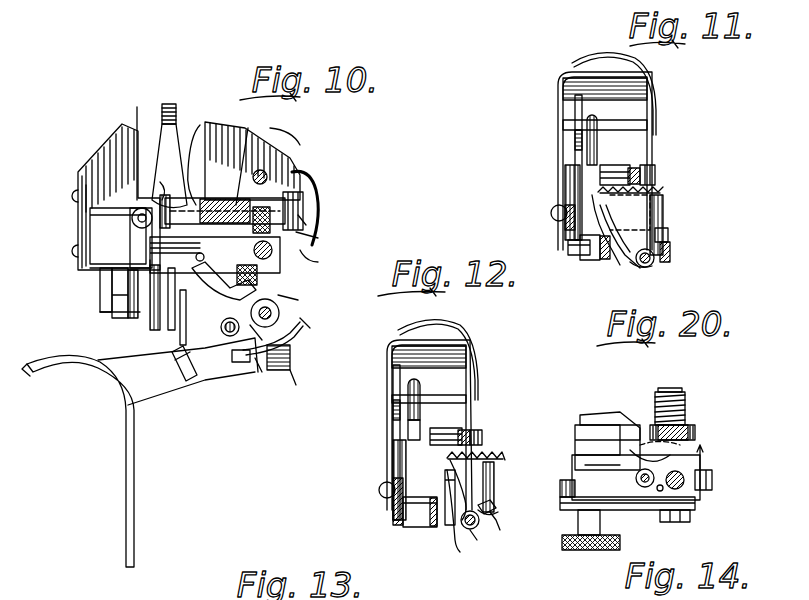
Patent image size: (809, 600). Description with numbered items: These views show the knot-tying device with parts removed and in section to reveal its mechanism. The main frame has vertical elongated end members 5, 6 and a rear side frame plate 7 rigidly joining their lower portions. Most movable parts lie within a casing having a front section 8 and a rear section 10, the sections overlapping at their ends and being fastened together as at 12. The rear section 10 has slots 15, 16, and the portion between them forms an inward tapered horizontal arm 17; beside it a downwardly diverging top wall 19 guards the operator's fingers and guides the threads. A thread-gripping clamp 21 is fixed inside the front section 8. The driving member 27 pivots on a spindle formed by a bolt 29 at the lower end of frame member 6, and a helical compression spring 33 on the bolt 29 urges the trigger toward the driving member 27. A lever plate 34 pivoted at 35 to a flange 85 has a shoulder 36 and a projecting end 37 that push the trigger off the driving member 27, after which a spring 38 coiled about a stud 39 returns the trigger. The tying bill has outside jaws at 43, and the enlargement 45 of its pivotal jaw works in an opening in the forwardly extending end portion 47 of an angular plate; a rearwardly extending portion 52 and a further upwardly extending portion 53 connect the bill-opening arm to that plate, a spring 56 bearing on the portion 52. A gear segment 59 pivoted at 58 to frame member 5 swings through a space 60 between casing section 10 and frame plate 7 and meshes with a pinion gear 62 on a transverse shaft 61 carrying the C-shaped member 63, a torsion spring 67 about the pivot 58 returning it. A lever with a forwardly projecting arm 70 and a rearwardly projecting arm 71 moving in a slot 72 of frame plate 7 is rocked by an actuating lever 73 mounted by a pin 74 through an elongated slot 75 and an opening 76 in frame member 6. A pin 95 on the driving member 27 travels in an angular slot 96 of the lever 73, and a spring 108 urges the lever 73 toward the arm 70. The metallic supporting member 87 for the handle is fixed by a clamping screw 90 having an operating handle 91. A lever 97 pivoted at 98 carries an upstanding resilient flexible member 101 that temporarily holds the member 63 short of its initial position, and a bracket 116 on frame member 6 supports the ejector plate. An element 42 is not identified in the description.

In FIG. 10, the end member 5 is at (118, 304).
In FIG. 11, the end member 5 is at (665, 212).
In FIG. 12, the end member 5 is at (488, 487).
In FIG. 10, the end member 6 is at (274, 140).
In FIG. 11, the rear side frame plate 7 is at (672, 254).
In FIG. 12, the rear side frame plate 7 is at (500, 528).
In FIG. 11, the front casing section 8 is at (560, 162).
In FIG. 12, the front casing section 8 is at (395, 436).
In FIG. 10, the rear casing section 10 is at (137, 132).
In FIG. 11, the rear casing section 10 is at (656, 90).
In FIG. 12, the rear casing section 10 is at (476, 402).
In FIG. 10, the casing fastening 12 is at (296, 140).
In FIG. 10, the slot 15 is at (136, 166).
In FIG. 10, the slot 16 is at (178, 168).
In FIG. 10, the horizontal arm 17 is at (171, 105).
In FIG. 11, the horizontal arm 17 is at (585, 58).
In FIG. 12, the horizontal arm 17 is at (444, 320).
In FIG. 10, the top wall 19 is at (115, 138).
In FIG. 11, the top wall 19 is at (600, 96).
In FIG. 12, the top wall 19 is at (450, 370).
In FIG. 11, the thread-gripping clamp 21 is at (572, 125).
In FIG. 12, the thread-gripping clamp 21 is at (396, 395).
In FIG. 10, the driving member 27 is at (258, 370).
In FIG. 10, the bolt 29 is at (300, 340).
In FIG. 20, the bolt 29 is at (680, 386).
In FIG. 20, the helical compression spring 33 is at (692, 408).
In FIG. 10, the lever plate 34 is at (258, 375).
In FIG. 20, the lever plate 34 is at (632, 424).
In FIG. 20, the pivot 35 is at (600, 450).
In FIG. 20, the shoulder 36 is at (704, 462).
In FIG. 10, the projecting end 37 is at (306, 322).
In FIG. 20, the projecting end 37 is at (704, 445).
In FIG. 10, the spring 38 is at (292, 360).
In FIG. 10, the stud 39 is at (290, 380).
In FIG. 20, the stud 39 is at (684, 488).
In FIG. 10, the nut 42 is at (303, 170).
In FIG. 10, the outside jaws 43 is at (160, 188).
In FIG. 10, the enlargement 45 is at (170, 205).
In FIG. 10, the forwardly extending end portion 47 is at (200, 127).
In FIG. 10, the rearwardly extending portion 52 is at (318, 262).
In FIG. 10, the upwardly extending portion 53 is at (316, 240).
In FIG. 10, the spring 56 is at (318, 195).
In FIG. 10, the pivot pin 58 is at (132, 318).
In FIG. 11, the pivot pin 58 is at (656, 268).
In FIG. 12, the pivot pin 58 is at (478, 538).
In FIG. 10, the gear segment 59 is at (98, 272).
In FIG. 11, the gear segment 59 is at (600, 252).
In FIG. 12, the gear segment 59 is at (446, 527).
In FIG. 11, the space 60 is at (662, 190).
In FIG. 12, the space 60 is at (500, 466).
In FIG. 10, the shaft 61 is at (132, 212).
In FIG. 11, the shaft 61 is at (672, 168).
In FIG. 12, the shaft 61 is at (452, 428).
In FIG. 11, the pinion gear 62 is at (638, 166).
In FIG. 12, the pinion gear 62 is at (478, 428).
In FIG. 11, the C-shaped member 63 is at (598, 150).
In FIG. 12, the C-shaped member 63 is at (406, 470).
In FIG. 10, the torsion spring 67 is at (104, 292).
In FIG. 11, the torsion spring 67 is at (622, 258).
In FIG. 12, the torsion spring 67 is at (488, 540).
In FIG. 10, the forwardly projecting arm 70 is at (210, 292).
In FIG. 12, the forwardly projecting arm 70 is at (456, 548).
In FIG. 11, the rearwardly projecting arm 71 is at (668, 236).
In FIG. 12, the rearwardly projecting arm 71 is at (496, 515).
In FIG. 12, the slot 72 is at (492, 505).
In FIG. 10, the actuating lever 73 is at (230, 338).
In FIG. 11, the actuating lever 73 is at (646, 268).
In FIG. 12, the actuating lever 73 is at (475, 530).
In FIG. 10, the pin 74 is at (282, 314).
In FIG. 10, the slot 75 is at (252, 250).
In FIG. 10, the opening 76 is at (310, 232).
In FIG. 10, the flange 85 is at (166, 395).
In FIG. 20, the flange 85 is at (714, 482).
In FIG. 10, the supporting member 87 is at (134, 522).
In FIG. 10, the clamping screw 90 is at (186, 350).
In FIG. 10, the operating handle 91 is at (170, 356).
In FIG. 20, the operating handle 91 is at (590, 548).
In FIG. 10, the pin 95 is at (242, 362).
In FIG. 10, the angular slot 96 is at (212, 262).
In FIG. 11, the lever 97 is at (578, 262).
In FIG. 12, the lever 97 is at (398, 517).
In FIG. 11, the pivot 98 is at (556, 220).
In FIG. 12, the pivot 98 is at (384, 492).
In FIG. 11, the resilient flexible member 101 is at (570, 255).
In FIG. 10, the spring 108 is at (300, 302).
In FIG. 10, the bracket 116 is at (248, 132).